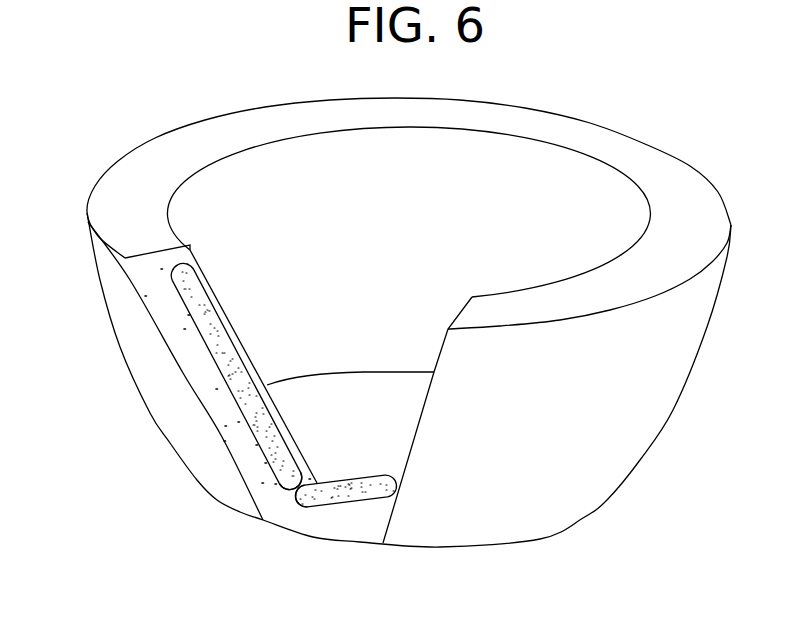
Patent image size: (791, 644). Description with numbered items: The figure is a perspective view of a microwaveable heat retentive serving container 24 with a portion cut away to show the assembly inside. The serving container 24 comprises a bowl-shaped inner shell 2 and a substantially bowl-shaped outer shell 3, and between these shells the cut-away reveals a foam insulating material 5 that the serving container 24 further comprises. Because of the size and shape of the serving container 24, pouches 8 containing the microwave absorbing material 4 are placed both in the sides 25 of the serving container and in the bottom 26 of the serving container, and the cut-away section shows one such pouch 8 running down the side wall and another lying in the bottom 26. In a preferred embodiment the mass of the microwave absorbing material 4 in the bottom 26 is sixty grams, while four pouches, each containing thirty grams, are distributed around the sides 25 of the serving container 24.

The serving container 24 is at (527, 95).
The inner shell 2 is at (188, 251).
The outer shell 3 is at (120, 348).
The sides 25 is at (222, 376).
The foam insulating material 5 is at (223, 413).
The pouches 8 is at (275, 466).
The microwave absorbing material 4 is at (347, 500).
The bottom 26 is at (370, 503).